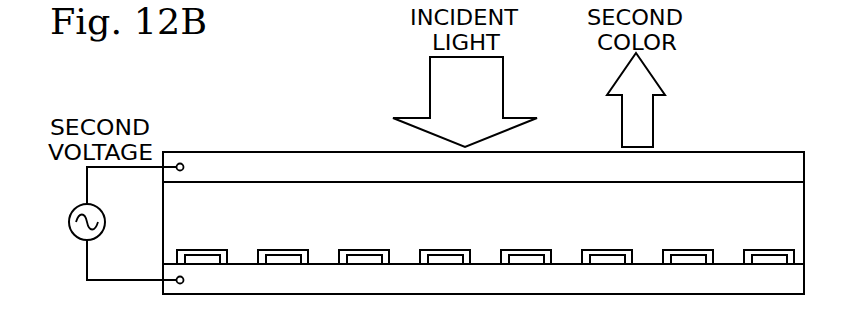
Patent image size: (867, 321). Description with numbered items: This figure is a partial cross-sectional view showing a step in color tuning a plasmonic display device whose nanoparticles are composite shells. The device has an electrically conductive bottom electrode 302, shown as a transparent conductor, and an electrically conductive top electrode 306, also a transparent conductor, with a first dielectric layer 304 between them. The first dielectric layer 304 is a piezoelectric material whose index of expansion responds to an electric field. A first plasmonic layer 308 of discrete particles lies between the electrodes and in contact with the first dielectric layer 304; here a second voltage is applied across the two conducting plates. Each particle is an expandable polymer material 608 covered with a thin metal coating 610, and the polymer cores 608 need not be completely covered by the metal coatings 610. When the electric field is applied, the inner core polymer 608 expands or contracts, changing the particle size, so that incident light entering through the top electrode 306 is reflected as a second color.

The bottom electrode 302 is at (682, 291).
The first dielectric layer 304 is at (503, 211).
The top electrode 306 is at (677, 176).
The first plasmonic layer 308 is at (151, 256).
The expandable polymer material 608 is at (200, 261).
The metal coating 610 is at (282, 250).